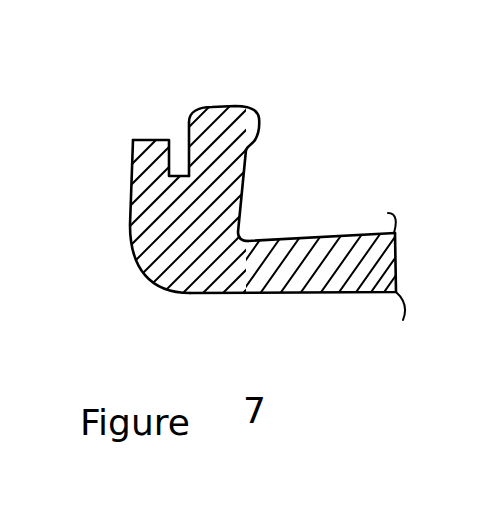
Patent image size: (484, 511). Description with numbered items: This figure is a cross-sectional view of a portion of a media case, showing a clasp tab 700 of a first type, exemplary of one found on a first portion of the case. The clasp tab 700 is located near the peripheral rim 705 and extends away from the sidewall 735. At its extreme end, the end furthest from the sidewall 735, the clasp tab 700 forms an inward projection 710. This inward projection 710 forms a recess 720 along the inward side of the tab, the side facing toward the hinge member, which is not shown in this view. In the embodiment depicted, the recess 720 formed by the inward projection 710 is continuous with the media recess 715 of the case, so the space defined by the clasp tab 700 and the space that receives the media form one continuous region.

The clasp tab 700 is at (217, 107).
The peripheral rim 705 is at (147, 137).
The inward projection 710 is at (267, 127).
The recess 720 is at (252, 192).
The media recess 715 is at (325, 195).
The sidewall 735 is at (273, 297).